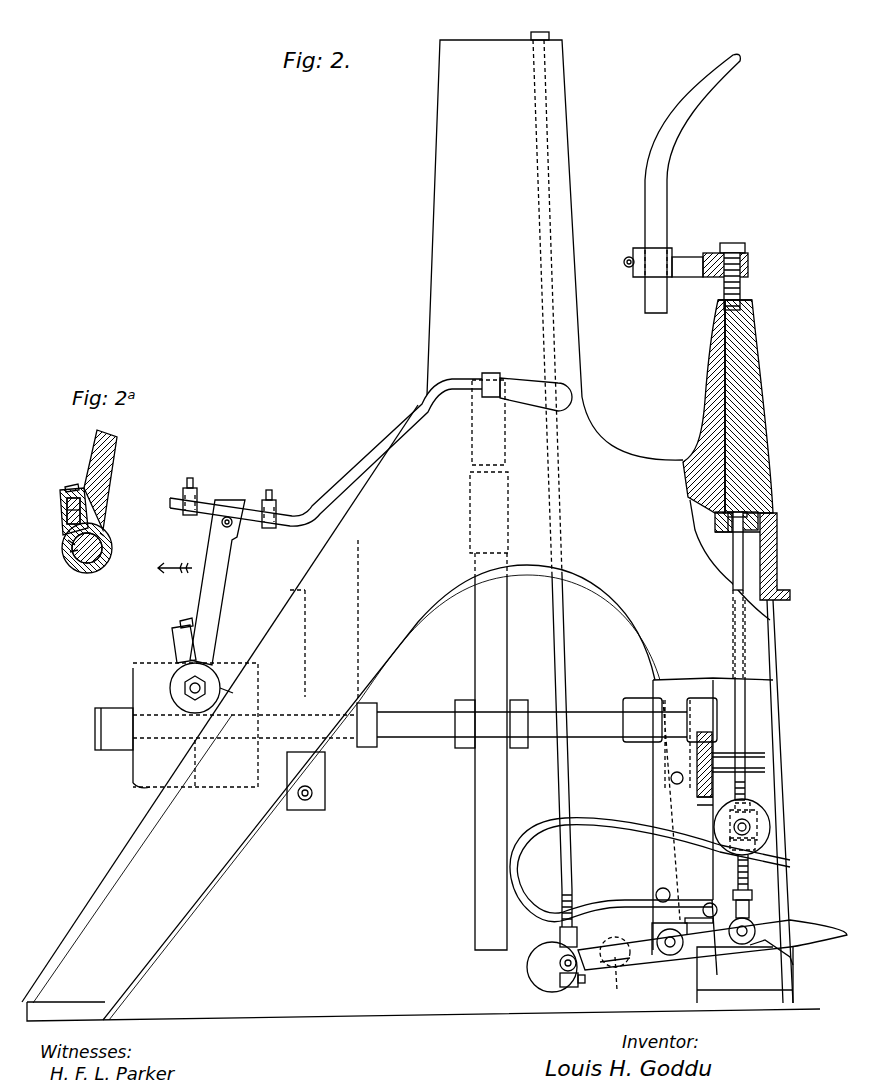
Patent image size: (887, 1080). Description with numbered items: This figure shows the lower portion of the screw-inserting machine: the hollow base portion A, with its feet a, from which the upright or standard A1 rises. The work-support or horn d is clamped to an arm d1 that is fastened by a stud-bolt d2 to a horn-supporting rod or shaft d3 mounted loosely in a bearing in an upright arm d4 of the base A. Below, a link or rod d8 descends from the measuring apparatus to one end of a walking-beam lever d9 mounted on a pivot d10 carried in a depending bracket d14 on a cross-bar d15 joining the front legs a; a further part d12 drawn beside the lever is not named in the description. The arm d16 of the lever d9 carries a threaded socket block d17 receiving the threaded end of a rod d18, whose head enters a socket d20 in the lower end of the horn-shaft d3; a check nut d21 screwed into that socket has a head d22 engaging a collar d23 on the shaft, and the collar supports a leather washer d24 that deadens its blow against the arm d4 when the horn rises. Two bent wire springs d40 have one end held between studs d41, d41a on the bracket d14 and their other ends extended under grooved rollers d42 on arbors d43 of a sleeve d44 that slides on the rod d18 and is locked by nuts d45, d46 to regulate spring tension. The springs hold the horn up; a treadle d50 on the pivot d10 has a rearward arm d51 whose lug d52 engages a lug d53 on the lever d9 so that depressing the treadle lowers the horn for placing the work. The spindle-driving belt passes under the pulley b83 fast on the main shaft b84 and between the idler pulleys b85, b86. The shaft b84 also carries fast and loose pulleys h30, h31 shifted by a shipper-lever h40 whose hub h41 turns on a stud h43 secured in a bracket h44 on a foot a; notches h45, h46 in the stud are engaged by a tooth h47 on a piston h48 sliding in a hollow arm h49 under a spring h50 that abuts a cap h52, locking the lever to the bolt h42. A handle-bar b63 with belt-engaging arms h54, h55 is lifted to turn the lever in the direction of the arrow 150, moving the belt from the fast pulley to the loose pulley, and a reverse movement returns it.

In FIG. 2, the base portion A is at (448, 708).
In FIG. 2, the upright or standard A1 is at (438, 203).
In FIG. 2, the feet a is at (190, 910).
In FIG. 2, the work-support or horn d is at (643, 201).
In FIG. 2, the arm d1 is at (686, 257).
In FIG. 2, the stud-bolt d2 is at (733, 243).
In FIG. 2, the horn-supporting rod or shaft d3 is at (718, 326).
In FIG. 2, the upright arm d4 is at (706, 376).
In FIG. 2, the link or rod d8 is at (541, 36).
In FIG. 2, the lever or walking beam d9 is at (592, 973).
In FIG. 2, the pivot d10 is at (752, 499).
In FIG. 2, the lever d12 is at (665, 937).
In FIG. 2, the bracket or arm d14 is at (650, 772).
In FIG. 2, the cross-bar d15 is at (713, 753).
In FIG. 2, the arm of lever d16 is at (714, 906).
In FIG. 2, the socket piece or block d17 is at (752, 921).
In FIG. 2, the link or rod d18 is at (745, 722).
In FIG. 2, the socket or opening d20 is at (715, 515).
In FIG. 2, the threaded sleeve or check nut d21 is at (725, 533).
In FIG. 2, the head of check nut d22 is at (733, 540).
In FIG. 2, the flange or collar d23 is at (778, 537).
In FIG. 2, the washer d24 is at (760, 521).
In FIG. 2, the bent springs d40 is at (603, 813).
In FIG. 2, the stud or projection d41 is at (657, 890).
In FIG. 2, the stud or projection d41a is at (716, 962).
In FIG. 2, the grooved rollers or wheels d42 is at (768, 826).
In FIG. 2, the studs or arbors d43 is at (736, 827).
In FIG. 2, the block or sleeve d44 is at (757, 813).
In FIG. 2, the nut d45 is at (750, 803).
In FIG. 2, the nut d46 is at (770, 839).
In FIG. 2, the treadle d50 is at (764, 956).
In FIG. 2, the rearwardly-extended arm d51 is at (620, 963).
In FIG. 2, the lug or projection d52 is at (617, 978).
In FIG. 2, the lug d53 is at (612, 940).
In FIG. 2, the handle-bar b63 is at (371, 471).
In FIG. 2, the pulley b83 is at (475, 836).
In FIG. 2, the shaft b84 is at (408, 740).
In FIG. 2, the pulley b85 is at (472, 541).
In FIG. 2, the pulley b86 is at (472, 450).
In FIG. 2, the fast pulley h30 is at (228, 772).
In FIG. 2, the loose pulley h31 is at (134, 783).
In FIG. 2, the shipper-lever h40 is at (228, 596).
In FIG. 2A, the shipper-lever h40 is at (117, 462).
In FIG. 2, the hub h41 is at (175, 688).
In FIG. 2A, the hub h41 is at (110, 560).
In FIG. 2A, the stud or bolt h42 is at (84, 565).
In FIG. 2, the stud or bolt h43 is at (215, 686).
In FIG. 2, the bracket or lug h44 is at (245, 726).
In FIG. 2A, the tooth or notch h45 is at (105, 537).
In FIG. 2A, the notch h46 is at (70, 553).
In FIG. 2A, the projection or tooth h47 is at (68, 542).
In FIG. 2A, the block or piston h48 is at (67, 520).
In FIG. 2, the hollow arm or cylinder h49 is at (172, 633).
In FIG. 2A, the hollow arm or cylinder h49 is at (60, 492).
In FIG. 2A, the spring h50 is at (82, 508).
In FIG. 2, the plug or cap h52 is at (184, 622).
In FIG. 2A, the plug or cap h52 is at (70, 486).
In FIG. 2, the belt-engaging arm h54 is at (290, 490).
In FIG. 2, the belt-engaging arm h55 is at (193, 488).
In FIG. 2A, the arrow 150 is at (176, 559).